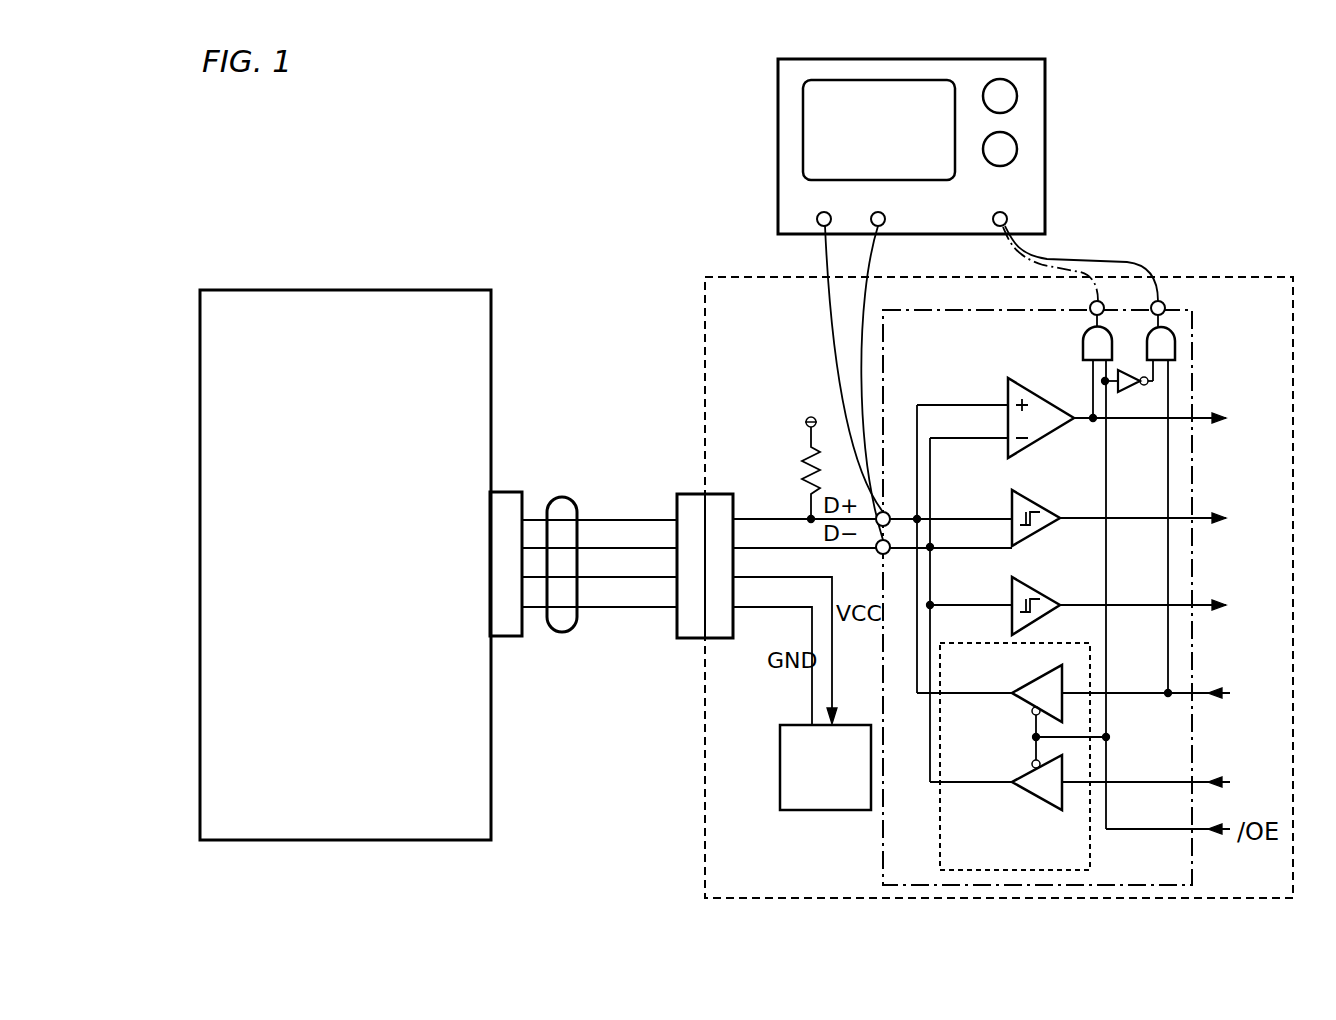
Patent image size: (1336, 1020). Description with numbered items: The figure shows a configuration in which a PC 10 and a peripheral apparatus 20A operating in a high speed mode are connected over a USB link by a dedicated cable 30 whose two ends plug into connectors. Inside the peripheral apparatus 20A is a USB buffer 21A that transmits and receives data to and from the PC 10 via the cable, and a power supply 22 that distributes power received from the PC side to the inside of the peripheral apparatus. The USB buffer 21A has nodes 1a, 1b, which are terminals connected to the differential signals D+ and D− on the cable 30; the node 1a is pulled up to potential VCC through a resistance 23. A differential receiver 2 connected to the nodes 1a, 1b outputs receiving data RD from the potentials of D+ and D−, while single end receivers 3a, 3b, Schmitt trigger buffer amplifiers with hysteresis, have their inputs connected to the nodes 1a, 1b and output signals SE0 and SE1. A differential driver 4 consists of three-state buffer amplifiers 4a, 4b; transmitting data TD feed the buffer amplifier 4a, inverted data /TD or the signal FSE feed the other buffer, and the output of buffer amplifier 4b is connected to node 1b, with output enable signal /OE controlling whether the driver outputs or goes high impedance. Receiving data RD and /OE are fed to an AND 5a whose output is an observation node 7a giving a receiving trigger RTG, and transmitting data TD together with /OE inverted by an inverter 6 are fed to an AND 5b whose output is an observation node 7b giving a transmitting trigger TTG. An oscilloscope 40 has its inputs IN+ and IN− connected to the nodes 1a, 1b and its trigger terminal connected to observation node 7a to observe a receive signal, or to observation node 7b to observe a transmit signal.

The PC 10 is at (463, 290).
The peripheral apparatus 20A is at (705, 357).
The dedicated cable 30 is at (568, 498).
The resistance 23 is at (801, 476).
The power supply 22 is at (801, 726).
The USB buffer 21A is at (883, 663).
The node 1a is at (885, 512).
The node 1b is at (885, 555).
The differential receiver 2 is at (1045, 437).
The single end receiver 3a is at (1042, 530).
The single end receiver 3b is at (1044, 592).
The differential driver 4 is at (1052, 643).
The buffer amplifier 4a is at (1028, 688).
The buffer amplifier 4b is at (1028, 775).
The AND 5a is at (1083, 348).
The AND 5b is at (1175, 340).
The inverter 6 is at (1128, 390).
The observation node 7a is at (1093, 305).
The observation node 7b is at (1155, 305).
The oscilloscope 40 is at (1020, 59).